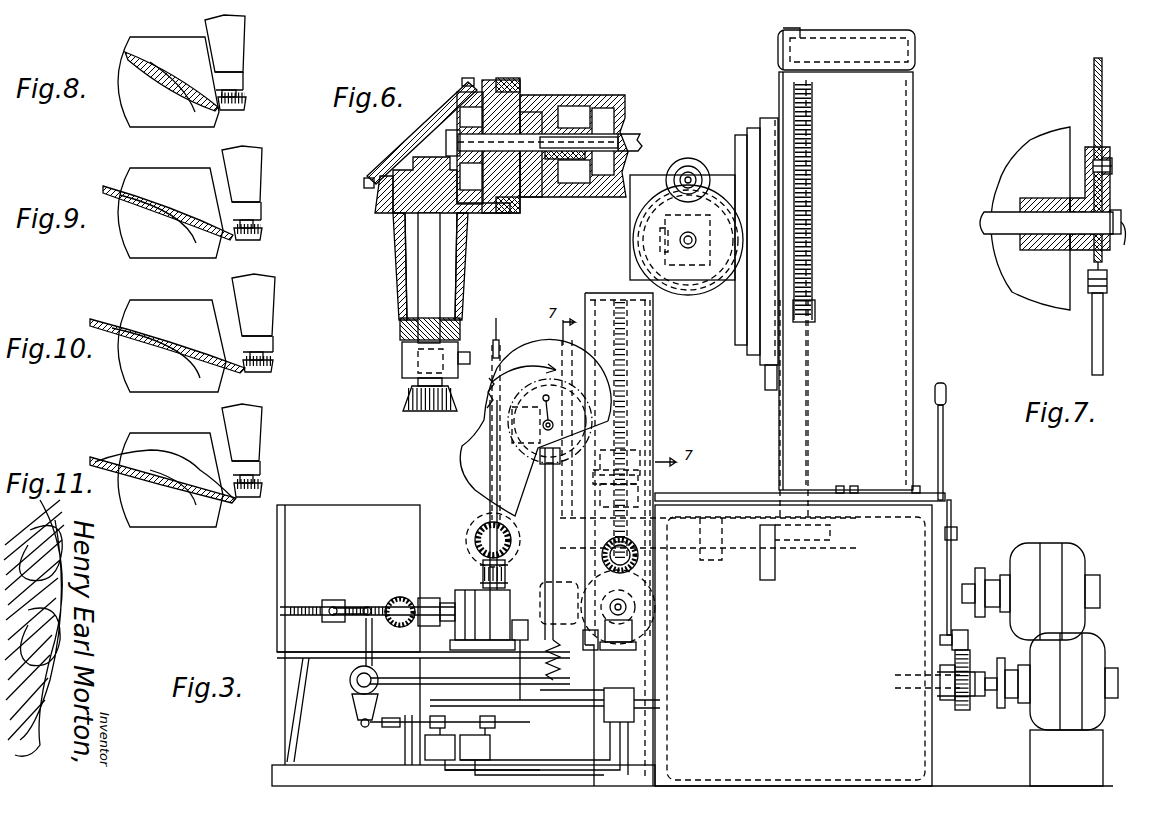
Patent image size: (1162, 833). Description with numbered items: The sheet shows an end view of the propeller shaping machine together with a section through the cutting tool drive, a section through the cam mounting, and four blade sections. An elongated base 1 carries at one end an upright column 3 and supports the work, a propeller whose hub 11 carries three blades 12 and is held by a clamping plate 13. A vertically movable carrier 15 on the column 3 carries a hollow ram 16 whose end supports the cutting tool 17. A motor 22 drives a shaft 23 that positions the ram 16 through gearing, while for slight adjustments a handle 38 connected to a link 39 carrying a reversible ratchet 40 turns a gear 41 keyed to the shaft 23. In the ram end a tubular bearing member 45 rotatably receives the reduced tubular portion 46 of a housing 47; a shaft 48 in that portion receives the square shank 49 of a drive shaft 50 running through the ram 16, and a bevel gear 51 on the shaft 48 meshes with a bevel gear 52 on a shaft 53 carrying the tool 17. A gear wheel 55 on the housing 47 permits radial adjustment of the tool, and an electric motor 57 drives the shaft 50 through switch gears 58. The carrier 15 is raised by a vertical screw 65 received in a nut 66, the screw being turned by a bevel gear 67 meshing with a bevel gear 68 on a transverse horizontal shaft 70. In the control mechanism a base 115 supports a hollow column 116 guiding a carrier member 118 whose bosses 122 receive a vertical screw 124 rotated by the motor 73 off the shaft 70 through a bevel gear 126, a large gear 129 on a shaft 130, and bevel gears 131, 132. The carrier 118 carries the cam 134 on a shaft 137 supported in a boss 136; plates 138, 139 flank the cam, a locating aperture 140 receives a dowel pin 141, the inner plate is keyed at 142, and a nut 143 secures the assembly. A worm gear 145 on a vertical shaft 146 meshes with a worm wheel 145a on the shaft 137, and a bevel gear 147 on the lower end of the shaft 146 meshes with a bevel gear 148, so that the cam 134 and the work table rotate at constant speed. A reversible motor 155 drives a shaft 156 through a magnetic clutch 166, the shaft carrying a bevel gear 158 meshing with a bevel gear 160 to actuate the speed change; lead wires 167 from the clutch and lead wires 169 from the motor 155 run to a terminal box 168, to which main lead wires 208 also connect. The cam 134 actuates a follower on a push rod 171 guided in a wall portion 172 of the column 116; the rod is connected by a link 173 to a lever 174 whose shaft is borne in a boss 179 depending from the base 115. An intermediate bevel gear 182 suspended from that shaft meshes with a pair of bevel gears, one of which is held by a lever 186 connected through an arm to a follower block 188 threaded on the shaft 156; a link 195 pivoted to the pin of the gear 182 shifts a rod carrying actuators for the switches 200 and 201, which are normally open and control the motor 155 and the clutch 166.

In FIG. 3, the base 1 is at (935, 774).
In FIG. 3, the upright column 3 is at (915, 322).
In FIG. 8, the hub 11 is at (126, 112).
In FIG. 9, the hub 11 is at (127, 233).
In FIG. 10, the hub 11 is at (128, 376).
In FIG. 11, the hub 11 is at (170, 518).
In FIG. 8, the blades 12 is at (174, 62).
In FIG. 9, the blades 12 is at (158, 190).
In FIG. 10, the blades 12 is at (165, 330).
In FIG. 11, the clamping plate 13 is at (160, 462).
In FIG. 3, the carrier 15 is at (766, 128).
In FIG. 6, the ram 16 is at (598, 98).
In FIG. 3, the ram 16 is at (690, 268).
In FIG. 8, the cutting tool 17 is at (242, 103).
In FIG. 9, the cutting tool 17 is at (262, 238).
In FIG. 10, the cutting tool 17 is at (275, 370).
In FIG. 11, the cutting tool 17 is at (263, 492).
In FIG. 6, the cutting tool 17 is at (422, 418).
In FIG. 3, the motor 22 is at (1070, 724).
In FIG. 3, the shaft 23 is at (905, 690).
In FIG. 3, the handle 38 is at (945, 440).
In FIG. 3, the link 39 is at (955, 562).
In FIG. 3, the ratchet 40 is at (970, 646).
In FIG. 3, the gear 41 is at (962, 712).
In FIG. 6, the bearing member 45 is at (516, 105).
In FIG. 6, the reduced tubular portion 46 is at (548, 112).
In FIG. 6, the housing 47 is at (380, 205).
In FIG. 6, the shaft 48 is at (500, 205).
In FIG. 6, the square shank 49 is at (556, 165).
In FIG. 6, the drive shaft 50 is at (628, 144).
In FIG. 6, the bevel gear 51 is at (452, 100).
In FIG. 6, the bevel gear 52 is at (395, 178).
In FIG. 6, the shaft 53 is at (436, 286).
In FIG. 6, the gear wheel 55 is at (502, 78).
In FIG. 3, the electric motor 57 is at (690, 160).
In FIG. 3, the switch gears 58 is at (634, 262).
In FIG. 3, the vertical screw 65 is at (812, 418).
In FIG. 3, the nut 66 is at (815, 300).
In FIG. 3, the bevel gear 67 is at (830, 542).
In FIG. 3, the bevel gear 68 is at (778, 562).
In FIG. 3, the horizontal shaft 70 is at (722, 562).
In FIG. 3, the motor 73 is at (1050, 545).
In FIG. 3, the base 115 is at (278, 733).
In FIG. 3, the hollow upright column 116 is at (657, 377).
In FIG. 7, the carrier member 118 is at (1022, 160).
In FIG. 3, the carrier member 118 is at (552, 362).
In FIG. 3, the bosses 122 is at (640, 452).
In FIG. 3, the vertical screw 124 is at (627, 352).
In FIG. 3, the bevel gear 126 is at (640, 548).
In FIG. 3, the gear 129 is at (655, 645).
In FIG. 3, the shaft 130 is at (650, 585).
In FIG. 3, the bevel gear 131 is at (638, 602).
In FIG. 3, the bevel gear 132 is at (628, 612).
In FIG. 7, the cam 134 is at (1104, 92).
In FIG. 3, the cam 134 is at (535, 352).
In FIG. 7, the boss 136 is at (1036, 198).
In FIG. 7, the shaft 137 is at (1006, 235).
In FIG. 7, the inner plate 138 is at (1090, 147).
In FIG. 7, the outer plate 139 is at (1112, 158).
In FIG. 7, the locating aperture 140 is at (1102, 160).
In FIG. 7, the dowel pin 141 is at (1112, 166).
In FIG. 7, the key 142 is at (1078, 234).
In FIG. 7, the nut 143 is at (1122, 240).
In FIG. 3, the worm gear 145 is at (470, 454).
In FIG. 3, the cam direction 145a is at (524, 373).
In FIG. 3, the vertical shaft 146 is at (497, 318).
In FIG. 3, the bevel gear 147 is at (480, 566).
In FIG. 3, the bevel gear 148 is at (478, 526).
In FIG. 3, the reversible electric motor 155 is at (514, 636).
In FIG. 3, the shaft 156 is at (380, 605).
In FIG. 3, the bevel gear 158 is at (418, 626).
In FIG. 3, the bevel gear 160 is at (402, 597).
In FIG. 3, the magnetically operated clutch 166 is at (466, 595).
In FIG. 3, the lead wires 167 is at (541, 706).
In FIG. 3, the terminal box 168 is at (634, 716).
In FIG. 3, the lead wires 169 is at (580, 690).
In FIG. 7, the push rod 171 is at (1090, 334).
In FIG. 3, the push rod 171 is at (560, 592).
In FIG. 3, the extended wall portion 172 is at (592, 646).
In FIG. 3, the link 173 is at (548, 665).
In FIG. 3, the lever 174 is at (432, 684).
In FIG. 3, the boss 179 is at (350, 672).
In FIG. 3, the bevel gear 182 is at (356, 706).
In FIG. 3, the lever 186 is at (360, 620).
In FIG. 3, the follower 188 is at (335, 600).
In FIG. 3, the link 195 is at (378, 728).
In FIG. 3, the switch 200 is at (425, 757).
In FIG. 3, the switch 201 is at (490, 748).
In FIG. 3, the wires 208 is at (664, 702).